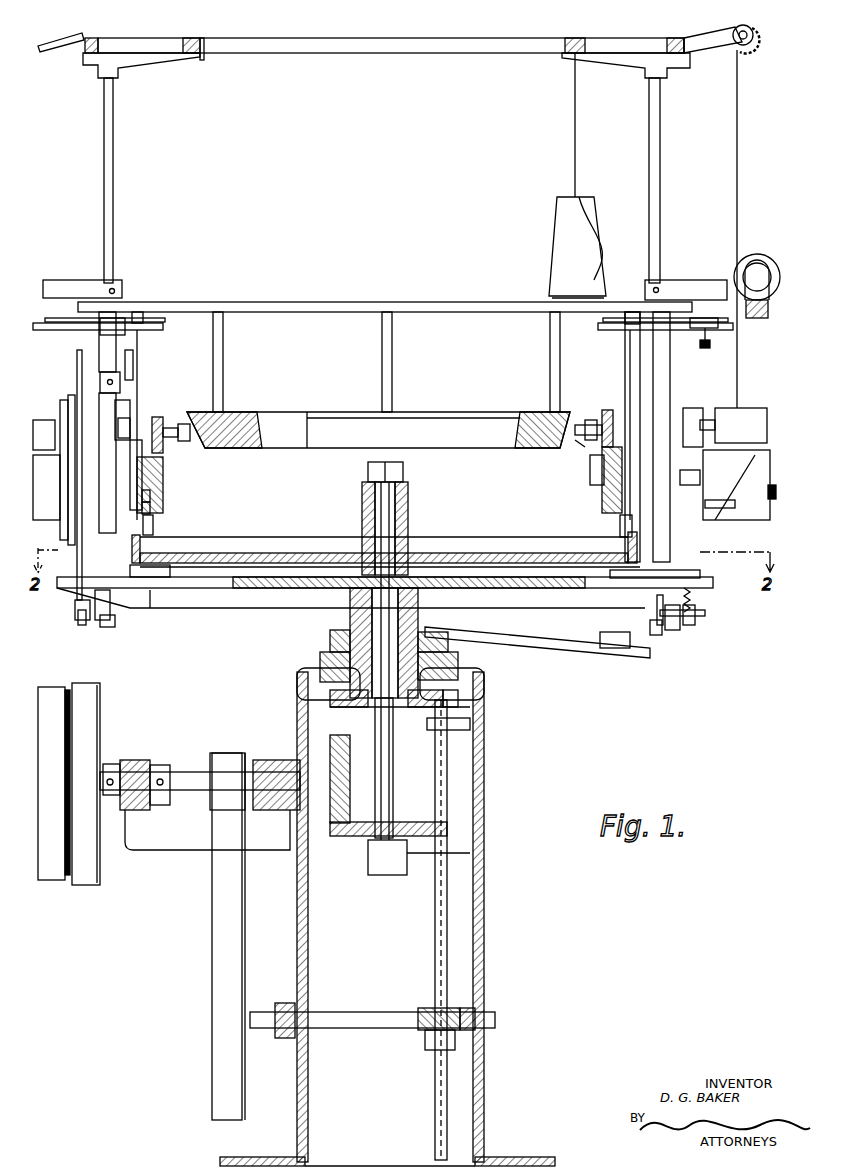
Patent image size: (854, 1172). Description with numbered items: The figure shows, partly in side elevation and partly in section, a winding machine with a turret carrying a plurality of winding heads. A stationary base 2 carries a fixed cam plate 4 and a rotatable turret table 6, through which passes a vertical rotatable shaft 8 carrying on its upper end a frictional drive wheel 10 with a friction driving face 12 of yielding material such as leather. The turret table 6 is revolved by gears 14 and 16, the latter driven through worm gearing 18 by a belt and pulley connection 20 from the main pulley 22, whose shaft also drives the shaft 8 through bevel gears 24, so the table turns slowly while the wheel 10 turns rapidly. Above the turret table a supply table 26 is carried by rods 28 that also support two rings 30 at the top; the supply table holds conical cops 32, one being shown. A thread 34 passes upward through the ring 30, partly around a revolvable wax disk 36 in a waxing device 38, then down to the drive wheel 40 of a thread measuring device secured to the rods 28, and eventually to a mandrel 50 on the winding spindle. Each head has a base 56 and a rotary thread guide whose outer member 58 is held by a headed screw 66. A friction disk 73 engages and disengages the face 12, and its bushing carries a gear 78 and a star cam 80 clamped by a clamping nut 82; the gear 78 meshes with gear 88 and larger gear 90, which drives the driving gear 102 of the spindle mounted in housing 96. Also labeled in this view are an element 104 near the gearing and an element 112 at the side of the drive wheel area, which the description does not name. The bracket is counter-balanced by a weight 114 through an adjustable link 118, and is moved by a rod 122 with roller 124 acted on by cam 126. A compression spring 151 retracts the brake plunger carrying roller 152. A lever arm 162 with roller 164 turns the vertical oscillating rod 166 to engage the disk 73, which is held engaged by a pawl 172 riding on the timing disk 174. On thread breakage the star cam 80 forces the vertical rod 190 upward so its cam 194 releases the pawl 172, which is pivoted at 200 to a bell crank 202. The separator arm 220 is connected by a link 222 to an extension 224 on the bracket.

The stationary base 2 is at (484, 968).
The fixed cam plate 4 is at (586, 660).
The rotatable turret table 6 is at (213, 590).
The vertical rotatable shaft 8 is at (375, 720).
The frictional drive wheel 10 is at (268, 555).
The friction driving face 12 is at (143, 592).
The gear 14 is at (440, 755).
The gear 16 is at (458, 700).
The worm gearing 18 is at (422, 1030).
The belt and pulley connection 20 is at (213, 896).
The main pulley 22 is at (100, 722).
The bevel gears 24 is at (333, 832).
The supply table 26 is at (322, 300).
The rods 28 is at (113, 202).
The rings 30 is at (100, 40).
The conical cops 32 is at (557, 218).
The thread 34 is at (575, 122).
The revolvable wax disk 36 is at (734, 28).
The waxing device 38 is at (768, 42).
The drive wheel of thread measuring device 40 is at (760, 258).
The mandrel 50 is at (768, 424).
The base of winding head 56 is at (160, 590).
The outer member of rotary thread guide 58 is at (771, 530).
The headed screw 66 is at (777, 492).
The friction disk 73 is at (160, 490).
The gear 78 is at (156, 524).
The star cam 80 is at (160, 515).
The clamping nut 82 is at (160, 503).
The gear 88 is at (598, 470).
The gear 90 is at (165, 472).
The housing 96 is at (88, 420).
The driving gear 102 is at (158, 428).
The shaft 104 is at (578, 450).
The cup 112 is at (302, 415).
The weight 114 is at (132, 408).
The adjustable link 118 is at (135, 385).
The rod 122 is at (655, 612).
The anti-friction roller 124 is at (110, 628).
The cam 126 is at (622, 650).
The compression spring 151 is at (692, 598).
The anti-friction roller 152 is at (78, 625).
The lever arm 162 is at (95, 620).
The anti-friction roller 164 is at (680, 628).
The vertical oscillating rod 166 is at (75, 602).
The pawl 172 is at (40, 322).
The timing disk 174 is at (720, 325).
The vertical rod 190 is at (140, 350).
The cam 194 is at (145, 330).
The pivot 200 is at (60, 332).
The bell crank 202 is at (92, 332).
The projecting arm 220 is at (772, 552).
The link 222 is at (735, 506).
The extension 224 is at (700, 480).